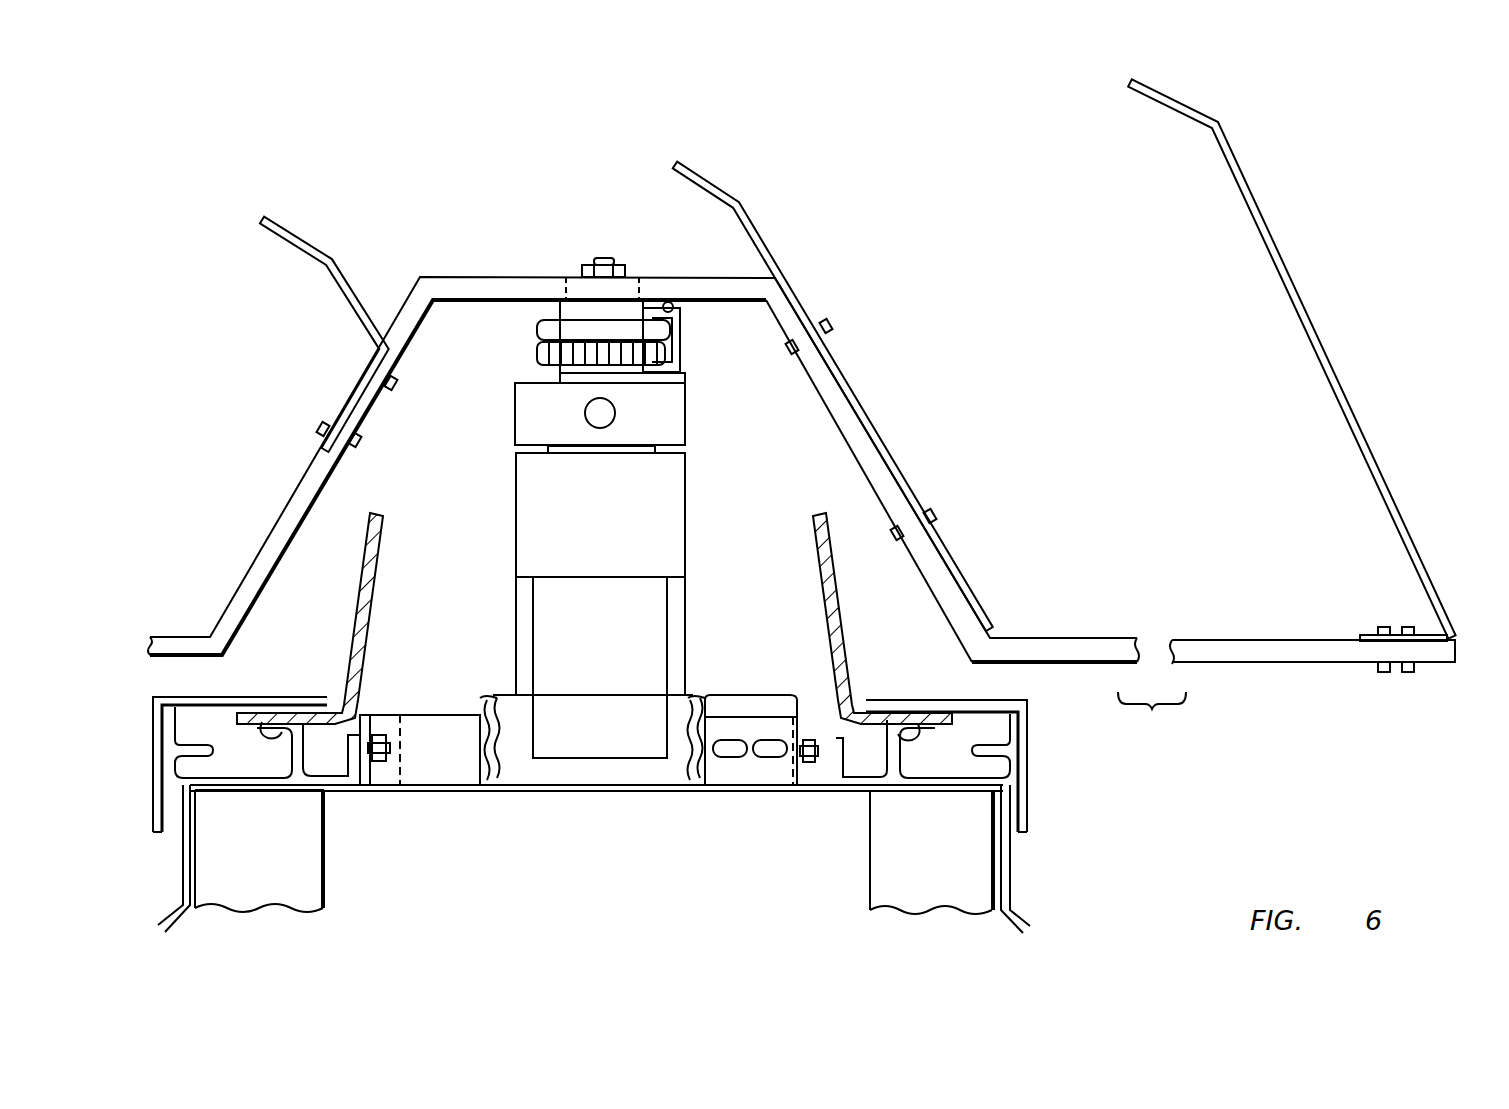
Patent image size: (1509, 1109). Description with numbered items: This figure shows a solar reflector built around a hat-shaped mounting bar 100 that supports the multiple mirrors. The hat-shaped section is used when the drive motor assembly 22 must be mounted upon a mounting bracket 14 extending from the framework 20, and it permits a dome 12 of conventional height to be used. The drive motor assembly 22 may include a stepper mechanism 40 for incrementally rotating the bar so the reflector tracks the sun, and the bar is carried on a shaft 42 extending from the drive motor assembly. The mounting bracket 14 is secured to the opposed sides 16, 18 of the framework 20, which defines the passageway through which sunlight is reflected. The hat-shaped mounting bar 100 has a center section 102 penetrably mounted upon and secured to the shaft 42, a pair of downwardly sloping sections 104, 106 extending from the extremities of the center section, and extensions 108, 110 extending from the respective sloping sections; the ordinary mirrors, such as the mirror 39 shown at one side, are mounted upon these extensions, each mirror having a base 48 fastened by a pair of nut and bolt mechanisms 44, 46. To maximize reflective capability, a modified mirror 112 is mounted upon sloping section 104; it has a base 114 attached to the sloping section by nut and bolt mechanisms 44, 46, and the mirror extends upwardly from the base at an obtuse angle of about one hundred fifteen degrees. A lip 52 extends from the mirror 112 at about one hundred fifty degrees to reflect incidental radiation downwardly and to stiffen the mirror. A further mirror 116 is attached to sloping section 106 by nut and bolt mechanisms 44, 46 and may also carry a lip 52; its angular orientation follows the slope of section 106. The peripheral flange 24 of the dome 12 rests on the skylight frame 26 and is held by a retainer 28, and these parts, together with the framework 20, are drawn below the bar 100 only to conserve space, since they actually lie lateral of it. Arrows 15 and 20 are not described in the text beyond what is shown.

The dome 12 is at (352, 613).
The mounting bracket 14 is at (435, 795).
The arrow direction 15 is at (293, 838).
The side of framework 16 is at (327, 908).
The side of framework 18 is at (862, 890).
The framework 20 is at (893, 851).
The drive motor assembly 22 is at (687, 522).
The peripheral flange 24 is at (303, 710).
The skylight frame 26 is at (336, 783).
The retainer 28 is at (244, 696).
The mirror 39 is at (1308, 349).
The stepper mechanism 40 is at (672, 346).
The shaft 42 is at (607, 258).
The nut and bolt mechanism 44 is at (1383, 626).
The nut and bolt mechanism 46 is at (1408, 627).
The base 48 is at (1365, 634).
The lip 52 is at (266, 234).
The hat-shaped mounting bar 100 is at (960, 566).
The center section 102 is at (478, 275).
The sloping section 104 is at (275, 542).
The sloping section 106 is at (878, 470).
The extension 108 is at (170, 635).
The extension 110 is at (1083, 638).
The modified mirror 112 is at (353, 298).
The base 114 is at (338, 410).
The further mirror 116 is at (866, 402).